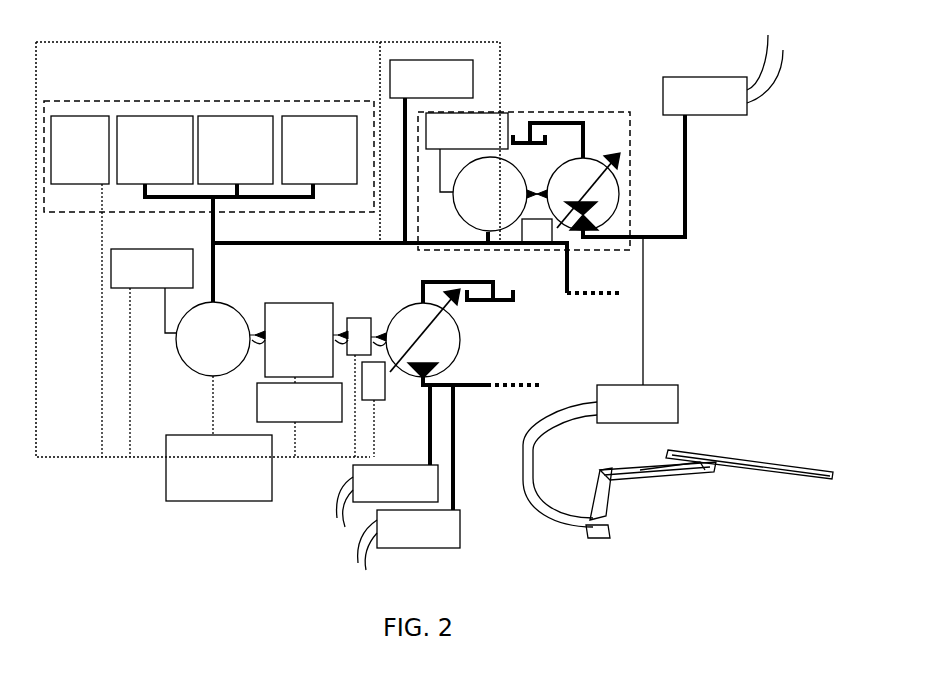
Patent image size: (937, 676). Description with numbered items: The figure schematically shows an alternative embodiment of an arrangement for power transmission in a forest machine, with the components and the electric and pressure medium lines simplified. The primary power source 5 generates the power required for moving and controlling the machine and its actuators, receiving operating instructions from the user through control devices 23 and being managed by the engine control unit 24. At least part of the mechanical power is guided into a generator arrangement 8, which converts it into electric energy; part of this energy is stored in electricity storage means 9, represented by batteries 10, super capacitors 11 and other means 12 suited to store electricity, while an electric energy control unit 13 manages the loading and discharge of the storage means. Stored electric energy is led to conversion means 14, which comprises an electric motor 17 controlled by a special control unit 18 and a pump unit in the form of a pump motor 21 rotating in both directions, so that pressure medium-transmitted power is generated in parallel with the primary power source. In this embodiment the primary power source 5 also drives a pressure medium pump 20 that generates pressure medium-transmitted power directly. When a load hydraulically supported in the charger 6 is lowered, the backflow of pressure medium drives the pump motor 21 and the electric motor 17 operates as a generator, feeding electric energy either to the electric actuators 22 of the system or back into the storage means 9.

The primary power source 5 is at (277, 312).
The charger 6 is at (763, 458).
The generator arrangement 8 is at (203, 355).
The electricity storage means 9 is at (70, 212).
The batteries 10 is at (150, 127).
The super capacitors 11 is at (230, 127).
The other means suited to store electricity 12 is at (312, 127).
The electric energy control unit 13 is at (80, 127).
The conversion means 14 is at (593, 112).
The electric motor 17 is at (483, 248).
The control unit 18 is at (492, 122).
The pressure medium pump 20 is at (450, 345).
The pump motor 21 is at (600, 193).
The electric actuators 22 is at (443, 70).
The control devices 23 is at (200, 482).
The engine control unit 24 is at (317, 425).